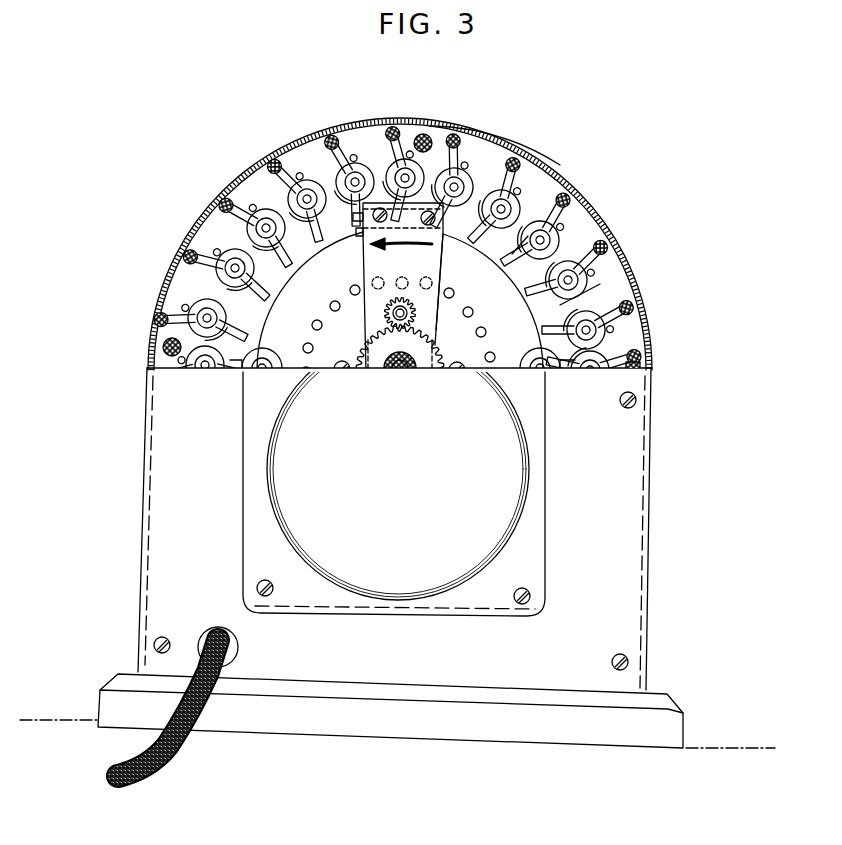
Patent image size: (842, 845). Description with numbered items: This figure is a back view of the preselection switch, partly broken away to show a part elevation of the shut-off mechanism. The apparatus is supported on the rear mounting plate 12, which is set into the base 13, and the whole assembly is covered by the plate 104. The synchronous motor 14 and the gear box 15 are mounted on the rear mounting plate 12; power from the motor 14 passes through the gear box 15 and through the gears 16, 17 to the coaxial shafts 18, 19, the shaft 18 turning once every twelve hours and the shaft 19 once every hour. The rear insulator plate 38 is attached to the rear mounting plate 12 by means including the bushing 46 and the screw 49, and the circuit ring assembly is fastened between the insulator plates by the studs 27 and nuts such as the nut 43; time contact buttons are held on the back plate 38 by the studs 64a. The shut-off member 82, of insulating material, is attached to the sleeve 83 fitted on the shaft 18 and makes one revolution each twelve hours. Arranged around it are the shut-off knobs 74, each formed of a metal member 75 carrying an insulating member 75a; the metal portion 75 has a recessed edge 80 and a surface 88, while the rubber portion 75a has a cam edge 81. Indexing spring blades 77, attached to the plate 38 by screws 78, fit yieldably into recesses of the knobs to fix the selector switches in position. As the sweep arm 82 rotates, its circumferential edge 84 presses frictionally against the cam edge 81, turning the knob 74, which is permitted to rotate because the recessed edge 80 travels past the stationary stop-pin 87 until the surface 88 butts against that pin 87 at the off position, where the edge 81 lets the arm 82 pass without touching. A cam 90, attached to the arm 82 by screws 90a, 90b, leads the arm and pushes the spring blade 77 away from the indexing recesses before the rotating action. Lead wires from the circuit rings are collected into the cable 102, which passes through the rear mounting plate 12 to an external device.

The rear mounting plate 12 is at (620, 560).
The base 13 is at (430, 710).
The motor 14 is at (382, 484).
The gear box 15 is at (263, 542).
The gear 16 is at (383, 313).
The gear 17 is at (388, 352).
The shaft 18 is at (383, 382).
The shaft 19 is at (403, 374).
The studs 27 is at (253, 375).
The rear insulator plate 38 is at (182, 284).
The nut 43 is at (270, 380).
The bushing 46 is at (415, 135).
The screw 49 is at (425, 136).
The studs 64a is at (312, 326).
The shut off knob 74 is at (258, 165).
The metal member 75 is at (250, 184).
The insulating member 75a is at (603, 352).
The indexing spring blade 77 is at (546, 213).
The screw 78 is at (565, 202).
The recessed edge 80 is at (597, 291).
The cam edge 81 is at (512, 254).
The shut-off member 82 is at (372, 273).
The sleeve 83 is at (412, 376).
The circumferential edge 84 is at (385, 203).
The stop-pin 87 is at (204, 230).
The surface 88 is at (547, 271).
The cam 90 is at (358, 238).
The screw 90a is at (375, 246).
The screw 90b is at (435, 235).
The cable 102 is at (175, 748).
The plate 104 is at (500, 140).